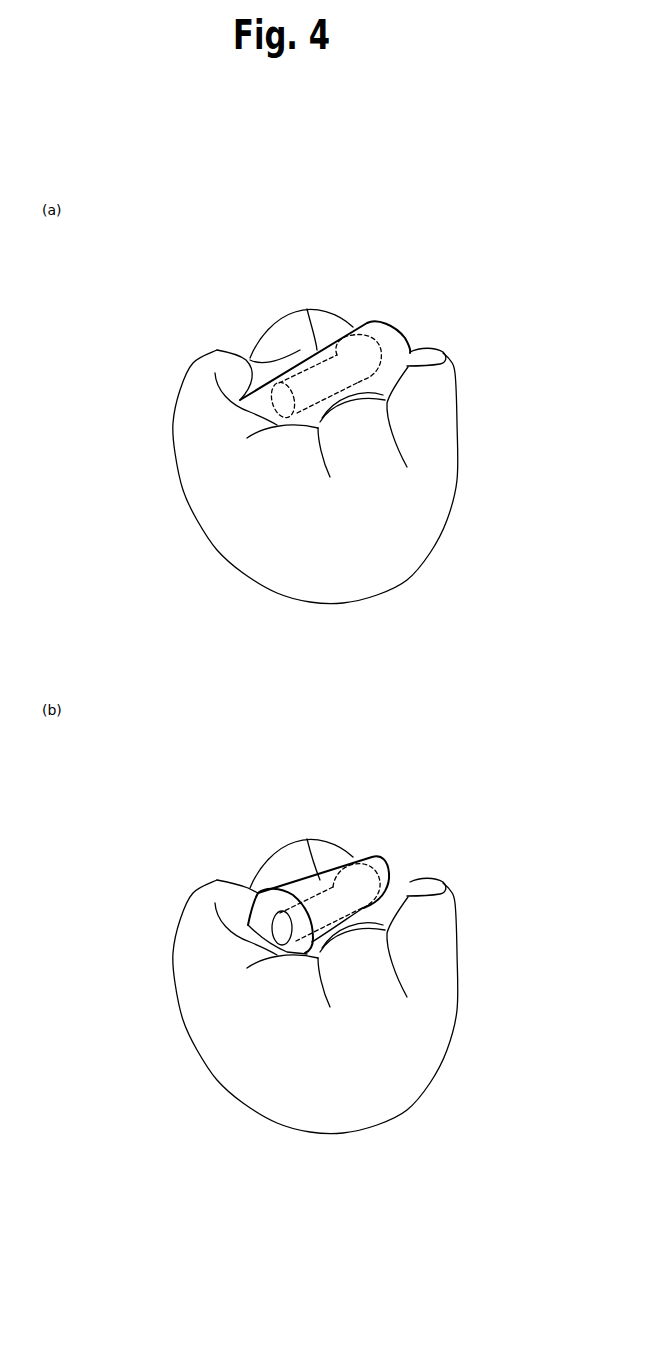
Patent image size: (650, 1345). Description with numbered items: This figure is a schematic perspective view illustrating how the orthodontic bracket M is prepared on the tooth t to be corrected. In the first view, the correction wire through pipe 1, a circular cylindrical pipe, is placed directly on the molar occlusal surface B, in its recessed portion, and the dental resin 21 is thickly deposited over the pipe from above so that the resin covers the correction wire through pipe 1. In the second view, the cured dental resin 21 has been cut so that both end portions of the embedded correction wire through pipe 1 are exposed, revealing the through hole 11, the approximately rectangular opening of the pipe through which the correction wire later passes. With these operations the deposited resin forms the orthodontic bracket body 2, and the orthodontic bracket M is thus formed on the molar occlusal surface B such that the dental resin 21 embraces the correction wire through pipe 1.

The correction wire through pipe 1 is at (371, 324).
The orthodontic bracket body 2 is at (298, 881).
The through hole 11 is at (285, 928).
The dental resin 21 is at (300, 350).
The molar occlusal surface B is at (404, 320).
The orthodontic bracket M is at (305, 862).
The tooth t is at (447, 450).